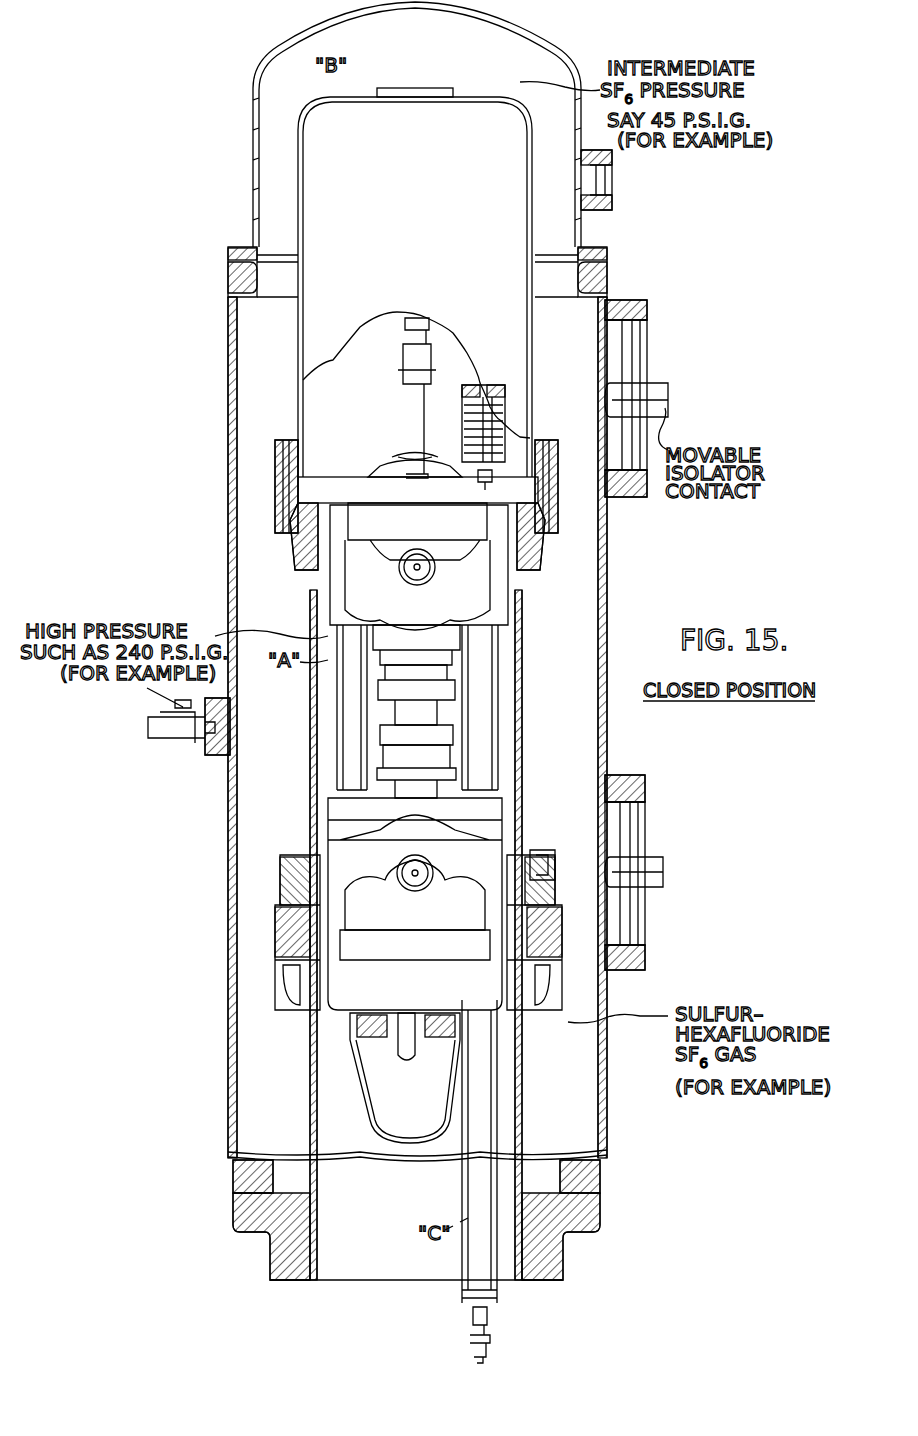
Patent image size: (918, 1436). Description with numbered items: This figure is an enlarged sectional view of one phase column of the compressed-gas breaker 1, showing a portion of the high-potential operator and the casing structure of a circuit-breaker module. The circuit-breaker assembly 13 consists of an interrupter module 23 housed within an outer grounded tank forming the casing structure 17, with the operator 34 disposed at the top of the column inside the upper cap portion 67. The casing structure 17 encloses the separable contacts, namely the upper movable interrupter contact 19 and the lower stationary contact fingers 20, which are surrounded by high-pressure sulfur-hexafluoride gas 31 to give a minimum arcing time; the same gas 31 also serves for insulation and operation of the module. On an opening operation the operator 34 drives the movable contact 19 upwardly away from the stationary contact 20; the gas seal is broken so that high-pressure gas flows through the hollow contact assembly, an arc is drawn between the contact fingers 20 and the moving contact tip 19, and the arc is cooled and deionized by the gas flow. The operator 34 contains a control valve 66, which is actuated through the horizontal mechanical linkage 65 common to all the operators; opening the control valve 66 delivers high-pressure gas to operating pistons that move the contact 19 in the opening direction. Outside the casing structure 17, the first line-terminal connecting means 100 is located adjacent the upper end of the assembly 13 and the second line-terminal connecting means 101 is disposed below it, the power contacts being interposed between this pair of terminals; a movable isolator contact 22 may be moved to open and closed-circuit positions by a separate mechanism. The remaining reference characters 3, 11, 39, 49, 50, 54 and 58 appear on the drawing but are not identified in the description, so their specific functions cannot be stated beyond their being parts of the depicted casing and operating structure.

The breaker 1 is at (684, 245).
The isolator switch structure 3 is at (637, 300).
The terminal bushing flange 11 is at (645, 497).
The circuit-breaker assembly 13 is at (216, 531).
The casing structure 17 is at (605, 557).
The movable interrupter contact 19 is at (395, 712).
The stationary contact fingers 20 is at (395, 740).
The movable isolator contact 22 is at (660, 385).
The circuit-breaker module 23 is at (450, 740).
The sulfur-hexafluoride gas 31 is at (618, 345).
The operator 34 is at (376, 387).
The pivot pin 39 is at (417, 565).
The insulating tube 49 is at (310, 1078).
The operating rod 50 is at (485, 1285).
The insulating drive tube 54 is at (500, 1090).
The valve fitting 58 is at (494, 483).
The horizontal mechanical linkage 65 is at (398, 462).
The control valve 66 is at (500, 420).
The upper cap portion 67 is at (535, 163).
The first line-terminal connecting means 100 is at (668, 404).
The second line-terminal connecting means 101 is at (663, 876).